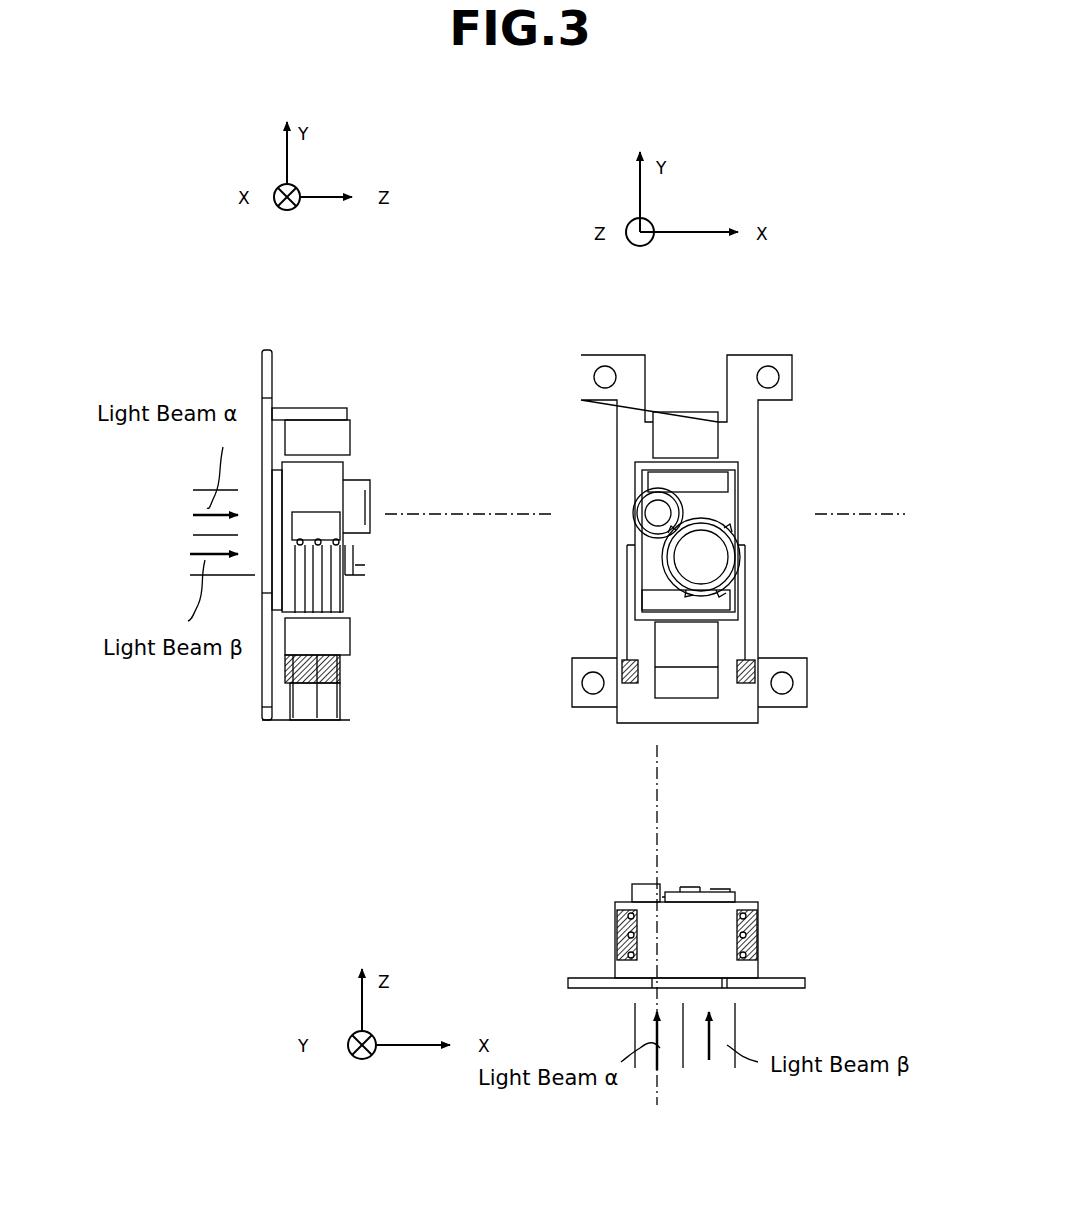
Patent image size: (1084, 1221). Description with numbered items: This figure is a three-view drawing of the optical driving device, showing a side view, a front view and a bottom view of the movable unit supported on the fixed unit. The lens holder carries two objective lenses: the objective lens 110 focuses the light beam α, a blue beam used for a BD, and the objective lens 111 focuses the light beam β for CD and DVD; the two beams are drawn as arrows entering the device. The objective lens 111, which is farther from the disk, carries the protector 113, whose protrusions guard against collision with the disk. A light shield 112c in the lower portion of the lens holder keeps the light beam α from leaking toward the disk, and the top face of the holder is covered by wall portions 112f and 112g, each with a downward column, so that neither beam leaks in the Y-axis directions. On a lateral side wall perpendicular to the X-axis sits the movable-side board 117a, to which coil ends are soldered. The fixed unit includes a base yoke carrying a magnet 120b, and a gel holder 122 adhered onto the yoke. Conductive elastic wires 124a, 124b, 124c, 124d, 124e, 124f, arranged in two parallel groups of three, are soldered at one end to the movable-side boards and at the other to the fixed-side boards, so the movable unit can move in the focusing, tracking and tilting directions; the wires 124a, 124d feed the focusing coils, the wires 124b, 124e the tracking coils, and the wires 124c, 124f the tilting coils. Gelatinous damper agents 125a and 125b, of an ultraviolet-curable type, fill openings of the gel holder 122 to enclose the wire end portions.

The objective lens 110 is at (637, 515).
The objective lens 111 is at (690, 565).
The light shield 112c is at (645, 538).
The wall portion 112f is at (677, 480).
The wall portion 112g is at (692, 597).
The protector 113 is at (728, 517).
The movable-side board 117a is at (355, 542).
The magnet 120b is at (665, 643).
The gel holder 122 is at (643, 710).
The wire 124a is at (338, 700).
The wire 124b is at (318, 700).
The wire 124c is at (298, 700).
The wire 124d is at (758, 910).
The wire 124e is at (758, 933).
The wire 124f is at (840, 967).
The gelatinous damper agent 125a is at (623, 672).
The gelatinous damper agent 125b is at (755, 673).